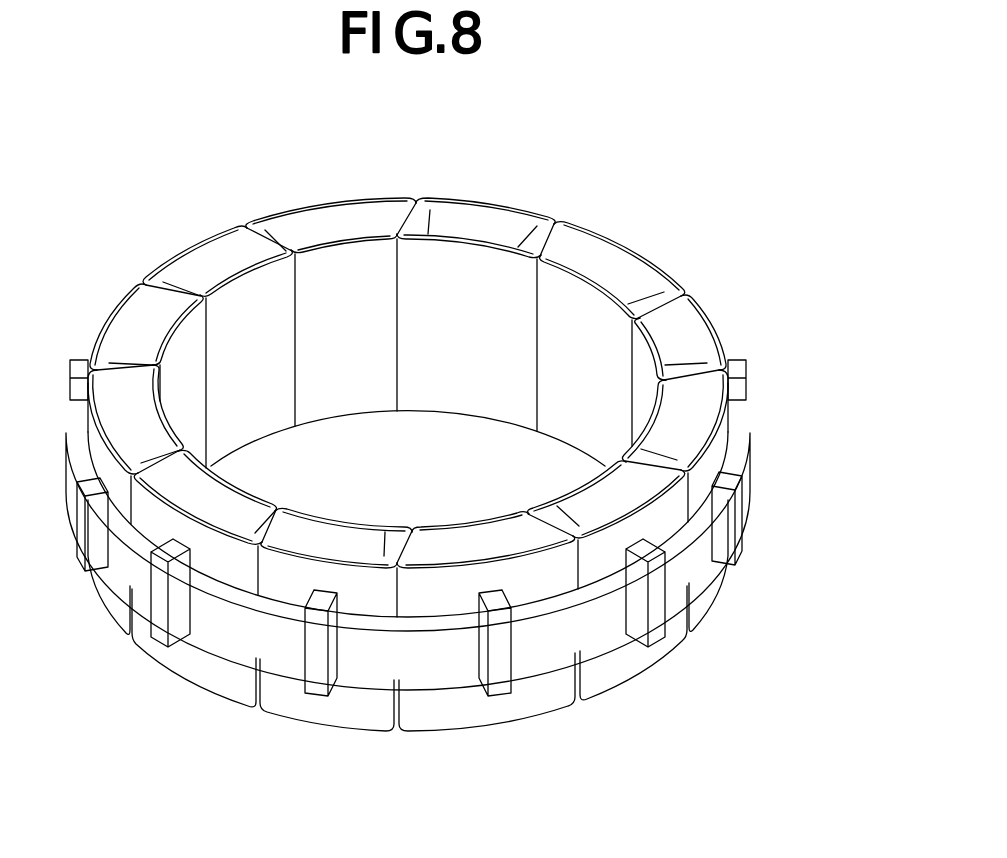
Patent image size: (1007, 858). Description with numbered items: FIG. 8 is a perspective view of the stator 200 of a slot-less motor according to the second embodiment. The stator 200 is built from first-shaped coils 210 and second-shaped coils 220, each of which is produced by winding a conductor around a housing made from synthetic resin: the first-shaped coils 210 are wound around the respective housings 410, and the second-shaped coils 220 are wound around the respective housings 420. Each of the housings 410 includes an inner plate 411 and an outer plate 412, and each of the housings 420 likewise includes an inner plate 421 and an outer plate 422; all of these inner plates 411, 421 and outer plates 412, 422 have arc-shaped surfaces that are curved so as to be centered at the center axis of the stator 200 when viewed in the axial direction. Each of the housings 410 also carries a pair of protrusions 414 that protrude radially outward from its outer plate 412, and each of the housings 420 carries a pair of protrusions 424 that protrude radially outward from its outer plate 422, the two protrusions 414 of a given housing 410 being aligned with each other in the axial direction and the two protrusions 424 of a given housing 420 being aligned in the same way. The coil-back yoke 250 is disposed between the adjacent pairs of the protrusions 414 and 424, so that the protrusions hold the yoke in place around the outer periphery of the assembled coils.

The stator 200 is at (675, 130).
The first-shaped coils 210 is at (305, 518).
The second-shaped coils 220 is at (449, 521).
The coil-back yoke 250 is at (238, 633).
The housings 410 is at (382, 746).
The inner plate 411 is at (358, 522).
The outer plate 412 is at (313, 720).
The protrusions 414 is at (592, 648).
The housings 420 is at (568, 727).
The inner plate 421 is at (467, 503).
The outer plate 422 is at (178, 670).
The protrusions 424 is at (742, 558).